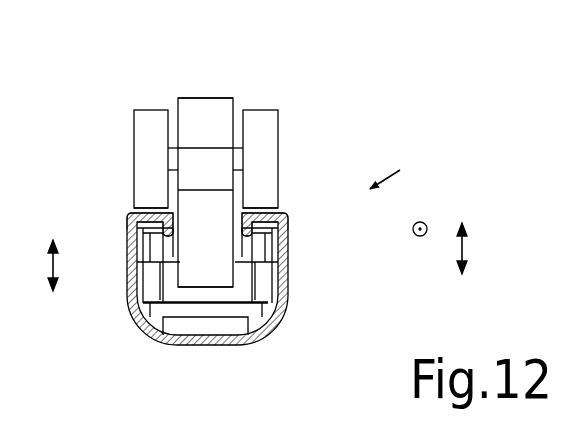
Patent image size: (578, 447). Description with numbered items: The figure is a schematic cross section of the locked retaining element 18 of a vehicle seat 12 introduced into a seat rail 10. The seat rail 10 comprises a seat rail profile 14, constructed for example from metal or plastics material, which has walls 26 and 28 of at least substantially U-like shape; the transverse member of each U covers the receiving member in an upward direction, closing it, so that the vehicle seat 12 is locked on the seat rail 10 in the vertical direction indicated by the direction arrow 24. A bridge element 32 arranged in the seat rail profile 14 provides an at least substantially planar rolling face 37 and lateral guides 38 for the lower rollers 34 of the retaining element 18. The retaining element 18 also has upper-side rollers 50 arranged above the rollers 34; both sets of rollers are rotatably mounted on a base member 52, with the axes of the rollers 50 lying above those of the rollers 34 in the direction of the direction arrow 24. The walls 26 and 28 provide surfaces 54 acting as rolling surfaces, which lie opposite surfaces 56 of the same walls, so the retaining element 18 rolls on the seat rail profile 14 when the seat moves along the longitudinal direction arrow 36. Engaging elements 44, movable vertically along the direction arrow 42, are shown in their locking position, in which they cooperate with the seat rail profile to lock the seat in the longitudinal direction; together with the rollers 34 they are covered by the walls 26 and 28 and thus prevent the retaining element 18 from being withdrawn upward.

The seat rail 10 is at (328, 375).
The vehicle seat 12 is at (190, 98).
The seat rail profile 14 is at (283, 330).
The retaining element 18 is at (403, 165).
The direction arrow 24 is at (468, 255).
The wall 26 is at (128, 214).
The wall 28 is at (288, 214).
The bridge element 32 is at (215, 322).
The lower rollers 34 is at (151, 305).
The direction arrow 36 is at (427, 226).
The rolling face 37 is at (213, 301).
The lateral guides 38 is at (128, 302).
The direction arrow 42 is at (49, 272).
The engaging elements 44 is at (283, 258).
The upper-side rollers 50 is at (148, 110).
The base member 52 is at (208, 150).
The surfaces 54 is at (166, 210).
The surfaces 56 is at (140, 229).